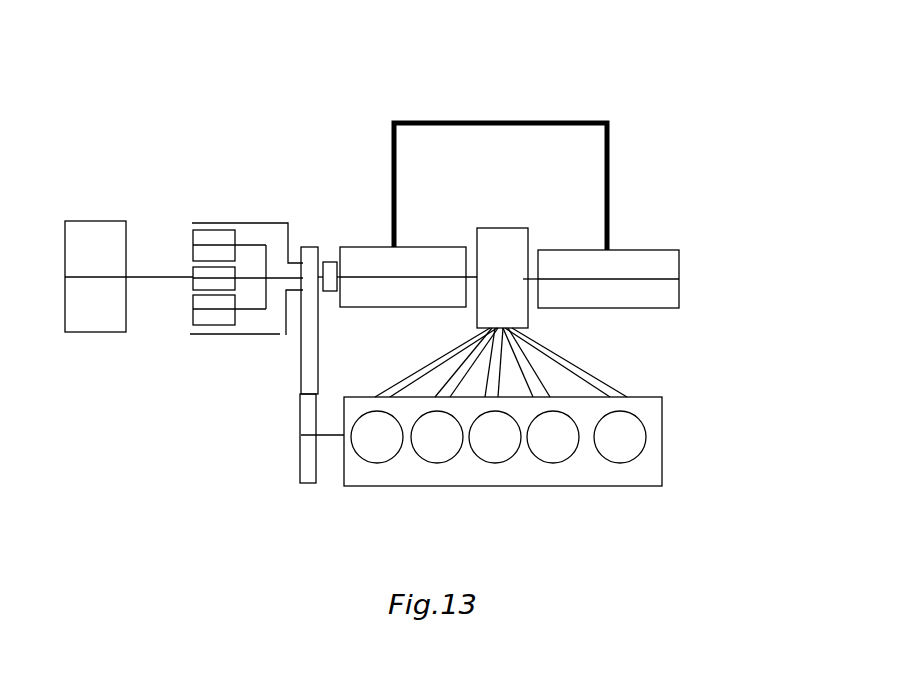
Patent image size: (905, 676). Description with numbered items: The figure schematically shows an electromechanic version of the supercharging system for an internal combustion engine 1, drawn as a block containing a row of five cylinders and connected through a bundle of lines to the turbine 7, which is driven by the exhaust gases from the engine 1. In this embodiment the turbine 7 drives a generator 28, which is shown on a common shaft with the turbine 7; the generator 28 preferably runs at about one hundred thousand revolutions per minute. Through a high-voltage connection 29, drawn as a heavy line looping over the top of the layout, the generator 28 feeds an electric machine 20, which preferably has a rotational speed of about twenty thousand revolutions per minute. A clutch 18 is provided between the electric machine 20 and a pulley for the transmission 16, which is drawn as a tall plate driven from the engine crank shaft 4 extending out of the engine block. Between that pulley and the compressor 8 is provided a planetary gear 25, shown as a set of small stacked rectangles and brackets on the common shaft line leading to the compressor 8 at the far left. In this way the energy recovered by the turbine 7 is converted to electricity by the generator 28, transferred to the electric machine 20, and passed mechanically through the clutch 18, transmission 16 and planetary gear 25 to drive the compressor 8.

The engine 1 is at (662, 459).
The engine crank shaft 4 is at (329, 435).
The turbine 7 is at (506, 240).
The compressor 8 is at (103, 221).
The transmission 16 is at (301, 361).
The clutch 18 is at (330, 292).
The electric machine 20 is at (367, 258).
The planetary gear 25 is at (237, 227).
The generator 28 is at (645, 258).
The connection line 29 is at (520, 118).